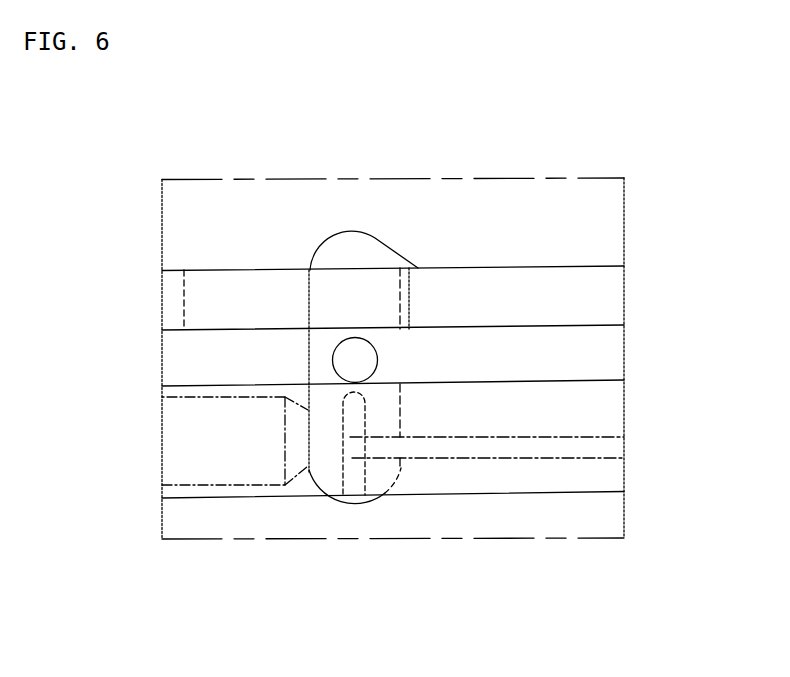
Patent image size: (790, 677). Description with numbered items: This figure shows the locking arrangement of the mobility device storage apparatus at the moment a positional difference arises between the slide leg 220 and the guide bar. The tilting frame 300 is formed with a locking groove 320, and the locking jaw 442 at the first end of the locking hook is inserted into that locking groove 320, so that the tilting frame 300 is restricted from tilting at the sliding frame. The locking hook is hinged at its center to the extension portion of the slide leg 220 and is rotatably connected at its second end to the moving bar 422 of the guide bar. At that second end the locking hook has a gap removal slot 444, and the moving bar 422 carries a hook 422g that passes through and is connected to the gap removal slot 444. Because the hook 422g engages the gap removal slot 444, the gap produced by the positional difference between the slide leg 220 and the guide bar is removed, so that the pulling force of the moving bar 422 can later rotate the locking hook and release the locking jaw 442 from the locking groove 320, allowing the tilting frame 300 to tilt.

The tilting frame 300 is at (595, 298).
The locking groove 320 is at (262, 270).
The slide leg 220 is at (595, 360).
The locking jaw 442 is at (403, 268).
The gap removal slot 444 is at (357, 412).
The moving bar 422 is at (478, 447).
The hook 422g is at (355, 440).